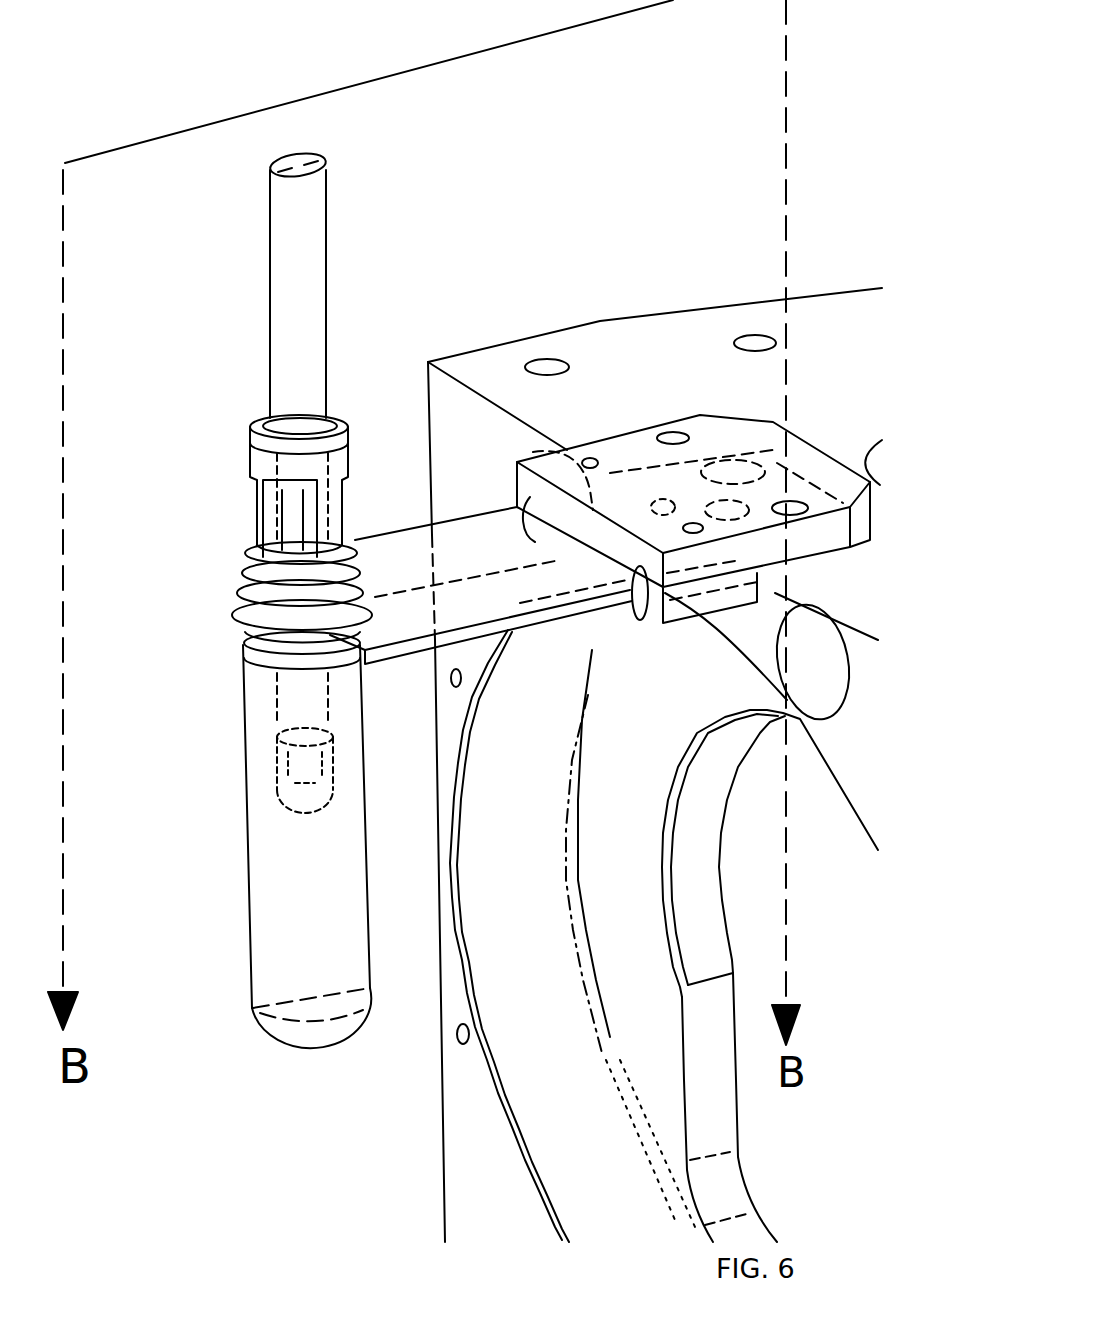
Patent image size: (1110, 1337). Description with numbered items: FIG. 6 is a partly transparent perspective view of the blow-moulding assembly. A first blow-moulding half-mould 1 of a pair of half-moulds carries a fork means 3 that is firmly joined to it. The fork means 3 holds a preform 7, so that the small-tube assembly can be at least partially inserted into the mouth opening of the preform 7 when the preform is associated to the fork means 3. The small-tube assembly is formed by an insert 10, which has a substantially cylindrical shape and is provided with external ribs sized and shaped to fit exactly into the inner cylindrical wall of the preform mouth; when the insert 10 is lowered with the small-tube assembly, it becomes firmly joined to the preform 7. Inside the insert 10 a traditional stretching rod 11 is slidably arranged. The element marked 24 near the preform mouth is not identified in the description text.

The first blow-moulding half-mould 1 is at (496, 346).
The fork means 3 is at (390, 533).
The preform 7 is at (247, 822).
The insert 10 is at (327, 233).
The stretching rod 11 is at (248, 453).
The threaded coupling 24 is at (233, 623).